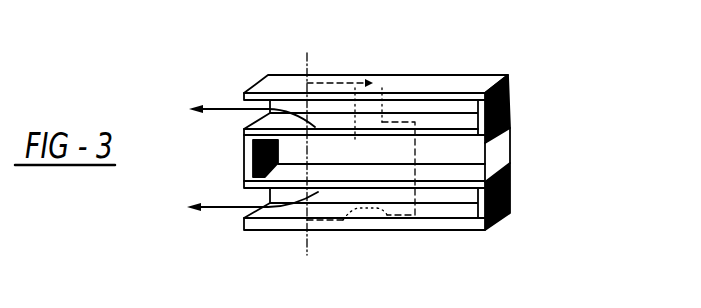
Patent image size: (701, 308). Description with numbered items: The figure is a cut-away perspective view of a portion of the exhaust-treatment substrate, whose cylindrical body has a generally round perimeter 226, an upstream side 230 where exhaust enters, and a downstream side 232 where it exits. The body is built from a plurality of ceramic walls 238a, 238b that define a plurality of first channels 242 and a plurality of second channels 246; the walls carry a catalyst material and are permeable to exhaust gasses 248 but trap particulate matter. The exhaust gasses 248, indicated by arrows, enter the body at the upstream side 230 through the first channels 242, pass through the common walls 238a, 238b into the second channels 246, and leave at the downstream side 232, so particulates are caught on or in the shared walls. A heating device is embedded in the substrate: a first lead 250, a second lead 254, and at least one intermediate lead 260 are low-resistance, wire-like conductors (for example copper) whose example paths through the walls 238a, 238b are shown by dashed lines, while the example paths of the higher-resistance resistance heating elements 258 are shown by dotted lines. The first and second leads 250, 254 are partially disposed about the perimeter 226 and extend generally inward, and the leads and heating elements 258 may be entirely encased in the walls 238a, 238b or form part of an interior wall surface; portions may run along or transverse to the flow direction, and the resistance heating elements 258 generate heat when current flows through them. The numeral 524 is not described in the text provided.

The perimeter 226 is at (396, 0).
The upstream side 230 is at (515, 97).
The downstream side 232 is at (247, 160).
The wall 238a is at (265, 227).
The wall 238b is at (300, 152).
The first channels 242 is at (498, 155).
The second channels 246 is at (455, 107).
The exhaust gasses 248 is at (325, 142).
The first lead 250 is at (307, 53).
The second lead 254 is at (307, 245).
The resistance heating element 258 is at (383, 84).
The intermediate lead 260 is at (417, 157).
The element 524 is at (98, 307).